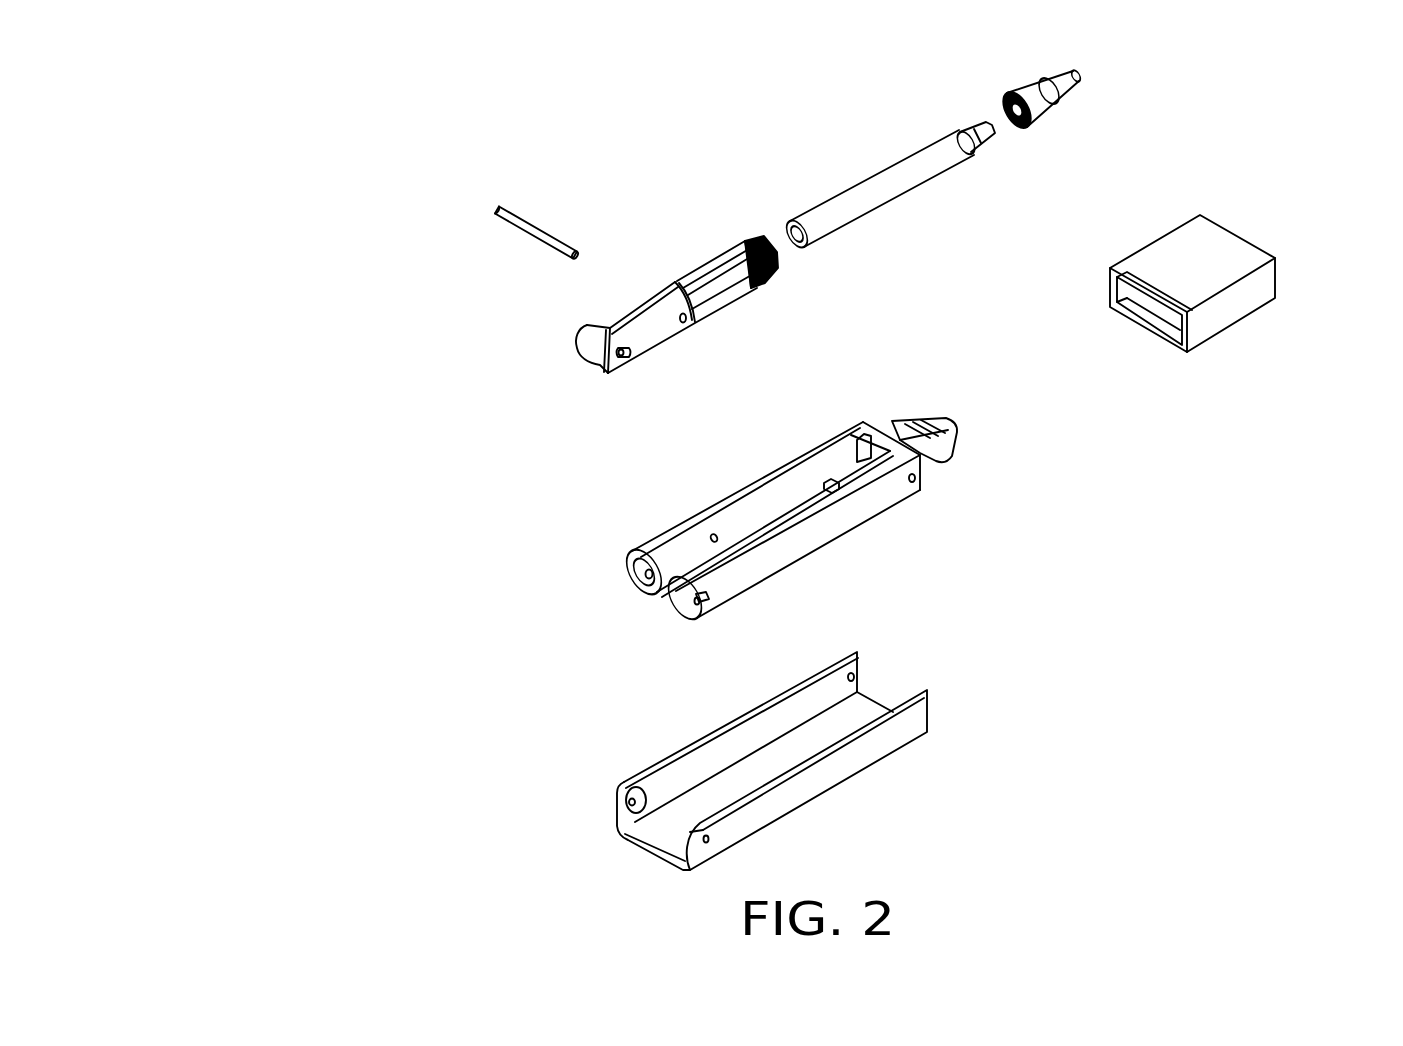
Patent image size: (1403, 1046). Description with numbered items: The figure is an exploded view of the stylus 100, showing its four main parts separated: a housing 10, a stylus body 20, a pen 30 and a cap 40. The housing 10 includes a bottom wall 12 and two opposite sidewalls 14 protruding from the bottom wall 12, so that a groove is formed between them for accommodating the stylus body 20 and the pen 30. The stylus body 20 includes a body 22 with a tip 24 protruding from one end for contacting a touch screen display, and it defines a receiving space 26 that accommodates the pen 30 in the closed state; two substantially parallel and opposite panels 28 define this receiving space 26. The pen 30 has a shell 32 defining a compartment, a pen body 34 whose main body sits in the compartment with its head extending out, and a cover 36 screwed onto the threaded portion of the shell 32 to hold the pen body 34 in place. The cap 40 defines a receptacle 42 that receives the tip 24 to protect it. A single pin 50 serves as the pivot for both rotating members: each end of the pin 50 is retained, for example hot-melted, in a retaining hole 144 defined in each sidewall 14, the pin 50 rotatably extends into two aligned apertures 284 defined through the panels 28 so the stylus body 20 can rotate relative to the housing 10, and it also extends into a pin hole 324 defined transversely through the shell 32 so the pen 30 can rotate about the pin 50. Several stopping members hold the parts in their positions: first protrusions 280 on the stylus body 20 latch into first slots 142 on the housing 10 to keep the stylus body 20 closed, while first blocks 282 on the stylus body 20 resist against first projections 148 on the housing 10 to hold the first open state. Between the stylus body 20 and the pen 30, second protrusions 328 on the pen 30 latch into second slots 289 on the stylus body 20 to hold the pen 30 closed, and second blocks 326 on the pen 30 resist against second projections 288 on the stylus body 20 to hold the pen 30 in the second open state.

The stylus 100 is at (344, 173).
The housing 10 is at (964, 710).
The bottom wall 12 is at (657, 830).
The sidewalls 14 is at (875, 750).
The first slots 142 is at (860, 678).
The retaining hole 144 is at (710, 841).
The first projections 148 is at (618, 805).
The stylus body 20 is at (961, 470).
The body 22 is at (853, 432).
The tip 24 is at (928, 425).
The receiving space 26 is at (658, 598).
The panels 28 is at (763, 487).
The first protrusions 280 is at (913, 483).
The first blocks 282 is at (710, 600).
The apertures 284 is at (697, 605).
The second projections 288 is at (643, 573).
The second slots 289 is at (711, 534).
The pen 30 is at (829, 94).
The shell 32 is at (712, 273).
The pin hole 324 is at (615, 365).
The second blocks 326 is at (636, 365).
The second protrusions 328 is at (684, 323).
The pen body 34 is at (843, 203).
The cover 36 is at (1003, 93).
The cap 40 is at (1222, 252).
The receptacle 42 is at (1157, 307).
The pin 50 is at (507, 222).